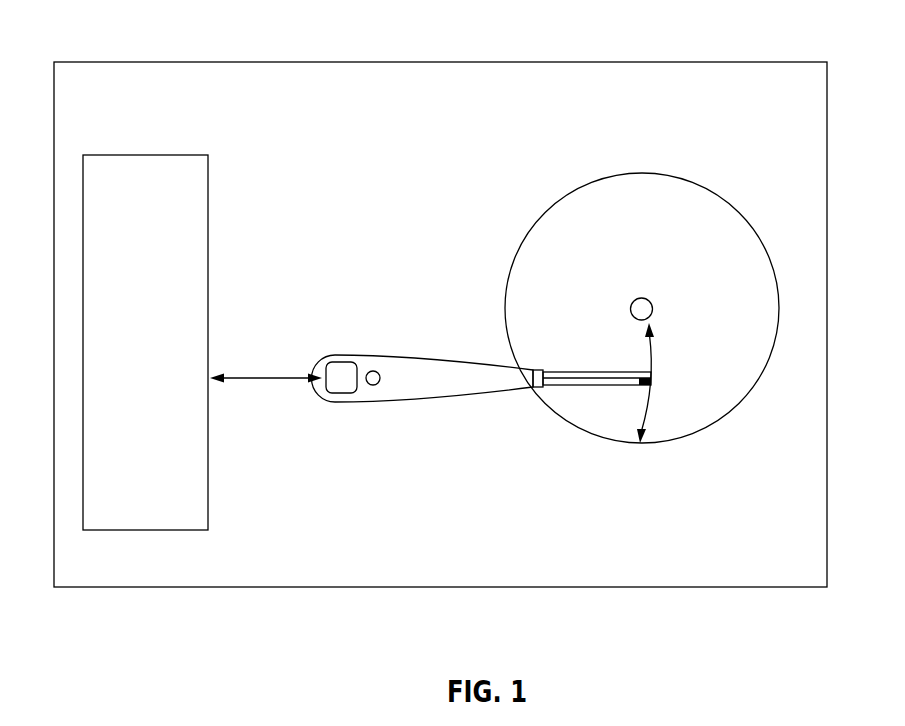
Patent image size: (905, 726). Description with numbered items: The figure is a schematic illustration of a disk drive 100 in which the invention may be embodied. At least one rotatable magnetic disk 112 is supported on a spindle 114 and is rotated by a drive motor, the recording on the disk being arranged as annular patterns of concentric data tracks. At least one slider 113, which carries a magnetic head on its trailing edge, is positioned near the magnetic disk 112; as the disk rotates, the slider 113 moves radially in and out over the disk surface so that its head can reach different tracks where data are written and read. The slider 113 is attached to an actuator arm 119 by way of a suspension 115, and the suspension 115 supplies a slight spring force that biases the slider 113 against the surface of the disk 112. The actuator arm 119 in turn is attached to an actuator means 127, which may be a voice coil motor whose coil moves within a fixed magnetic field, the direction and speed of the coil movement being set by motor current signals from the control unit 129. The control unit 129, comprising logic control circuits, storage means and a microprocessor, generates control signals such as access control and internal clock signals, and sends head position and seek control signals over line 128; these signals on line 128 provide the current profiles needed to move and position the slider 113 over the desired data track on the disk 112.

The disk drive 100 is at (343, 54).
The magnetic disk 112 is at (708, 189).
The slider 113 is at (647, 370).
The spindle 114 is at (653, 311).
The suspension 115 is at (619, 378).
The actuator arm 119 is at (418, 388).
The actuator means 127 is at (341, 370).
The line 128 is at (237, 376).
The control unit 129 is at (91, 175).